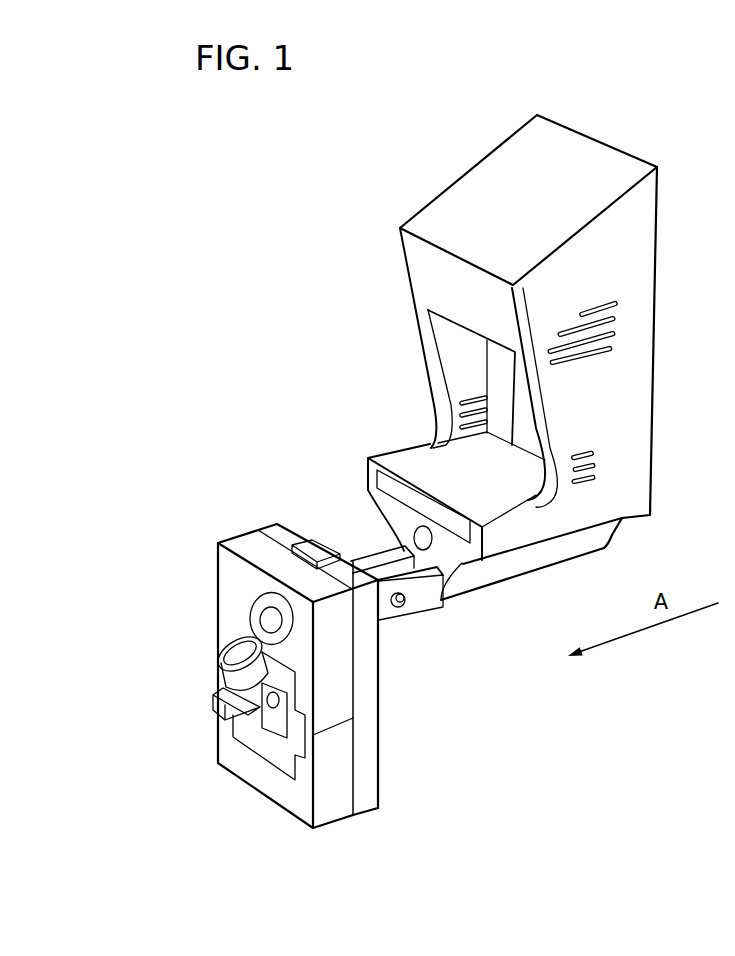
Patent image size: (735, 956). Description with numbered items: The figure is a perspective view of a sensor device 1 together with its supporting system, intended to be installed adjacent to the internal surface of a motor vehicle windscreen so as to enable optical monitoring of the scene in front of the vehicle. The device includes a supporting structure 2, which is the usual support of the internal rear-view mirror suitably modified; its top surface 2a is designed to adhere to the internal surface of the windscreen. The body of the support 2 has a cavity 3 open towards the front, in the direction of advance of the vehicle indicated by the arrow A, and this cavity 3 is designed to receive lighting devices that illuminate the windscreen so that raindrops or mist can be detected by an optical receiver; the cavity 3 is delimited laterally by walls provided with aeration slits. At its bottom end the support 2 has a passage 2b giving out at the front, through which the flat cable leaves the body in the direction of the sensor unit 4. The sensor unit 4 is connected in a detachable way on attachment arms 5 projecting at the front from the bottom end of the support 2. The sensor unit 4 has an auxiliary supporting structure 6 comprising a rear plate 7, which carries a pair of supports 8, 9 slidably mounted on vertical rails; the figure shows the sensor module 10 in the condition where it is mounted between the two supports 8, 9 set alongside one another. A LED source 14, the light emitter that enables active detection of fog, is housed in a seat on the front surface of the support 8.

The sensor device 1 is at (190, 296).
The supporting structure 2 is at (664, 304).
The top surface 2a is at (462, 200).
The passage 2b is at (385, 487).
The cavity 3 is at (453, 357).
The sensor unit 4 is at (222, 509).
The attachment arms 5 is at (378, 553).
The auxiliary supporting structure 6 is at (211, 564).
The rear plate 7 is at (370, 768).
The support 8 is at (226, 597).
The support 9 is at (292, 800).
The sensor module 10 is at (258, 741).
The LED source 14 is at (276, 621).